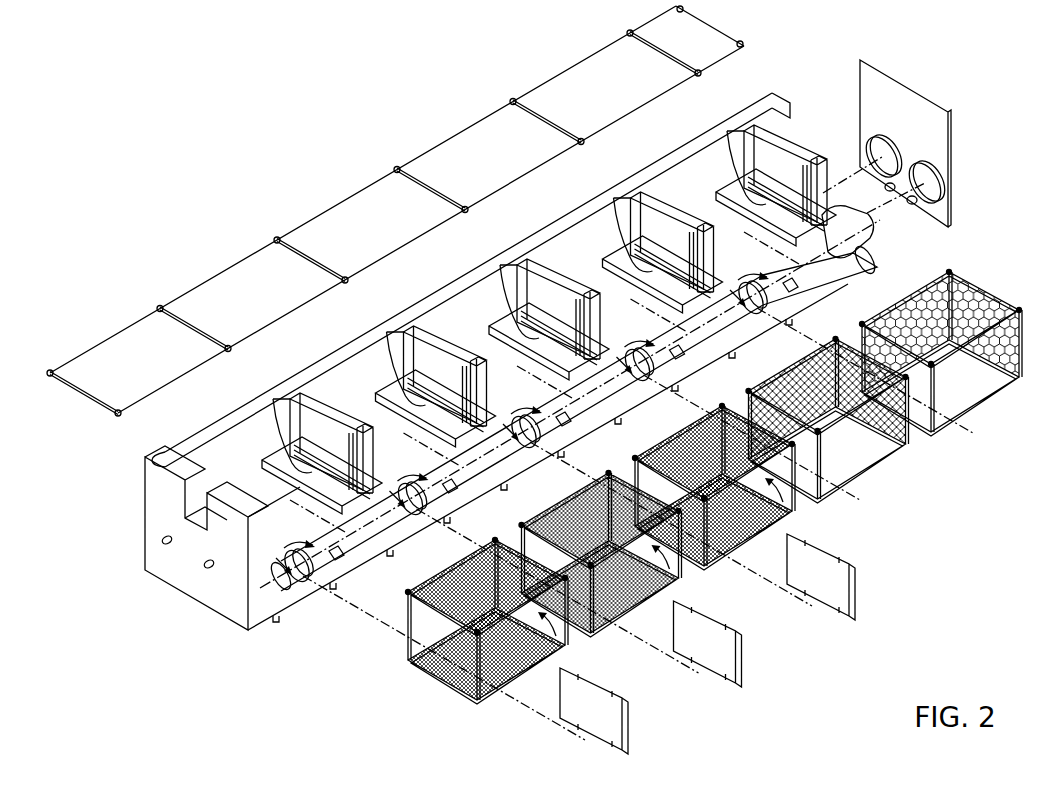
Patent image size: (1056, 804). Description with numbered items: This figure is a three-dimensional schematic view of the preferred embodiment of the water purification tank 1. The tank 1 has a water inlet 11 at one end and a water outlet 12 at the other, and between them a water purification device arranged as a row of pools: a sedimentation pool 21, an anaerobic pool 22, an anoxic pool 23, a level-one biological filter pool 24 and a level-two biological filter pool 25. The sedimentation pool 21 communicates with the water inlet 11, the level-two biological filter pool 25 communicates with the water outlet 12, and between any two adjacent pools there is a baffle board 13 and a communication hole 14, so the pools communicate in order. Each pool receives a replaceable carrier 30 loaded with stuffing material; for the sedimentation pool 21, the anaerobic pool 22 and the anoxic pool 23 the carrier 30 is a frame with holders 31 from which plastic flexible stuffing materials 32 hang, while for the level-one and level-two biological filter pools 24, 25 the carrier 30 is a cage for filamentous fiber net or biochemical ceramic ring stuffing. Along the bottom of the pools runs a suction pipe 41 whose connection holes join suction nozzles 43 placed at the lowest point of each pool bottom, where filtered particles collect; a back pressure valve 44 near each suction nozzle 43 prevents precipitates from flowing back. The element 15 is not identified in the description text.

The water purification tank 1 is at (126, 640).
The water inlet 11 is at (178, 490).
The water outlet 12 is at (872, 150).
The baffle board 13 is at (318, 423).
The communication hole 14 is at (278, 405).
The support tray 15 is at (272, 450).
The sedimentation pool 21 is at (292, 578).
The anaerobic pool 22 is at (406, 511).
The anoxic pool 23 is at (519, 444).
The level-1 biological filter pool 24 is at (632, 377).
The level-2 biological filter pool 25 is at (746, 310).
The carrier 30 is at (478, 700).
The holder 31 is at (566, 645).
The plastic flexible stuffing material 32 is at (630, 721).
The suction pipe 41 is at (878, 266).
The suction nozzle 43 is at (317, 567).
The back pressure valve 44 is at (339, 571).